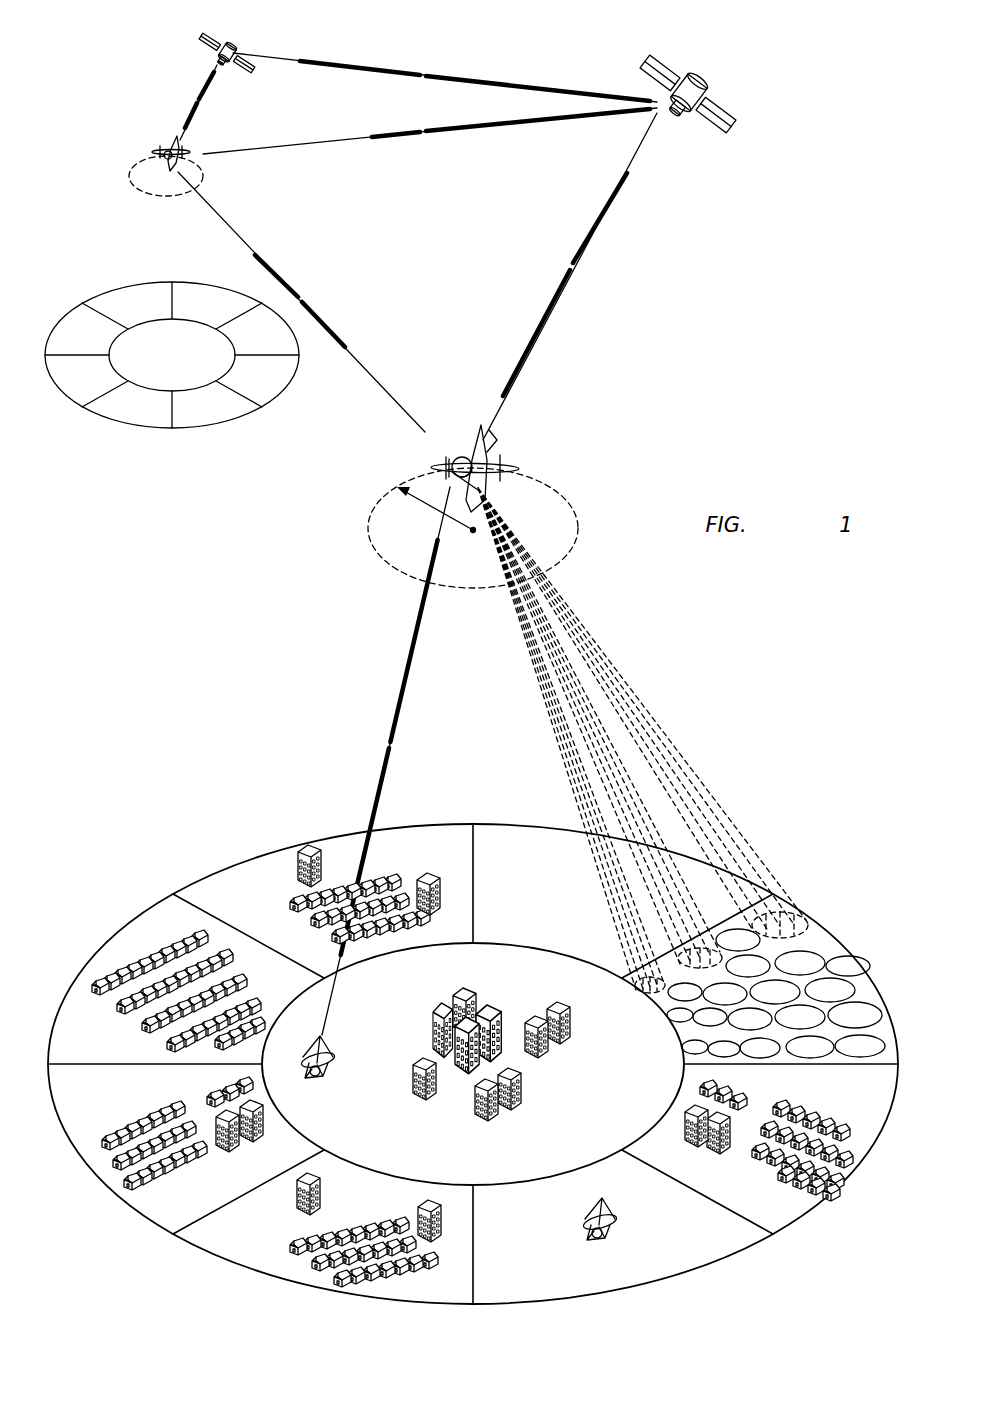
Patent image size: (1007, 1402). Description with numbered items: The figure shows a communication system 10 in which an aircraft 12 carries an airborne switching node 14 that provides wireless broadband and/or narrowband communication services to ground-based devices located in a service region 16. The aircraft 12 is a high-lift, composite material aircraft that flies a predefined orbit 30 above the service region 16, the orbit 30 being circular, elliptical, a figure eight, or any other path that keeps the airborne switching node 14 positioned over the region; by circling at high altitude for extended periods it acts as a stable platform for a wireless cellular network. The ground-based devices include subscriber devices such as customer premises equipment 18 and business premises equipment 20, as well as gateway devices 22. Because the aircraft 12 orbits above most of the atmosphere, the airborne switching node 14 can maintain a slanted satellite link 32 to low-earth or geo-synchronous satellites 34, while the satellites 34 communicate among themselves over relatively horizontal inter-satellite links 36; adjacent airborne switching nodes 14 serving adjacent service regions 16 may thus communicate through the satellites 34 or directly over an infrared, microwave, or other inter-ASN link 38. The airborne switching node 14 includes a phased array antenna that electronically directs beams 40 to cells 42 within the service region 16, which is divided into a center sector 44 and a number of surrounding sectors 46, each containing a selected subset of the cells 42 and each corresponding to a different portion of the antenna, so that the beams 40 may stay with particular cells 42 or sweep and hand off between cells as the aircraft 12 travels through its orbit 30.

The communication system 10 is at (789, 271).
The aircraft 12 is at (162, 154).
The airborne switching node 14 is at (169, 150).
The service region 16 is at (131, 285).
The customer premises equipment 18 is at (246, 1001).
The business premises equipment 20 is at (425, 881).
The gateway devices 22 is at (333, 1053).
The orbit 30 is at (386, 566).
The satellite link 32 is at (207, 96).
The satellite 34 is at (232, 48).
The inter-satellite link 36 is at (428, 72).
The inter-ASN link 38 is at (279, 278).
The beams 40 is at (562, 752).
The cells 42 is at (815, 940).
The center sector 44 is at (473, 1064).
The surrounding sectors 46 is at (667, 1019).